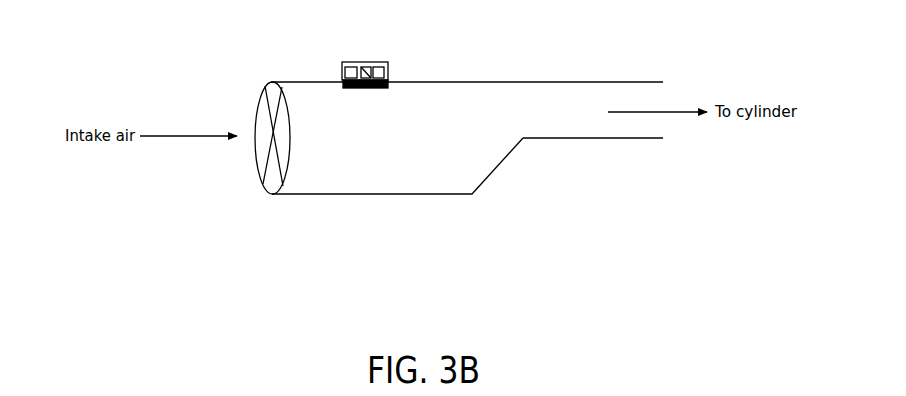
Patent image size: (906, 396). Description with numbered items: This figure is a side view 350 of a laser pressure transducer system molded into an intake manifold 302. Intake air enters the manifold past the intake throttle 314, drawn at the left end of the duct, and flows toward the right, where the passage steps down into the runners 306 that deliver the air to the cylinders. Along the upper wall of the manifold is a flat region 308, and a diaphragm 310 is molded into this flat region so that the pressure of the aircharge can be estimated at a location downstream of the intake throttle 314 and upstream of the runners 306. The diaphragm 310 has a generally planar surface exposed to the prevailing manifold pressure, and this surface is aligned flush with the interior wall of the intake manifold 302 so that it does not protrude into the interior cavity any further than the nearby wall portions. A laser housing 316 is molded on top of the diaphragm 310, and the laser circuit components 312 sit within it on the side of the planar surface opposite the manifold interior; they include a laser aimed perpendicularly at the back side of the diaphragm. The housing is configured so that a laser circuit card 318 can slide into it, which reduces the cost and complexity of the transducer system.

The side view 350 is at (172, 63).
The intake manifold 302 is at (418, 195).
The runners 306 is at (547, 139).
The flat region 308 is at (405, 81).
The diaphragm 310 is at (363, 88).
The laser circuit components 312 is at (360, 70).
The intake throttle 314 is at (272, 165).
The laser housing 316 is at (366, 66).
The laser circuit card 318 is at (344, 72).